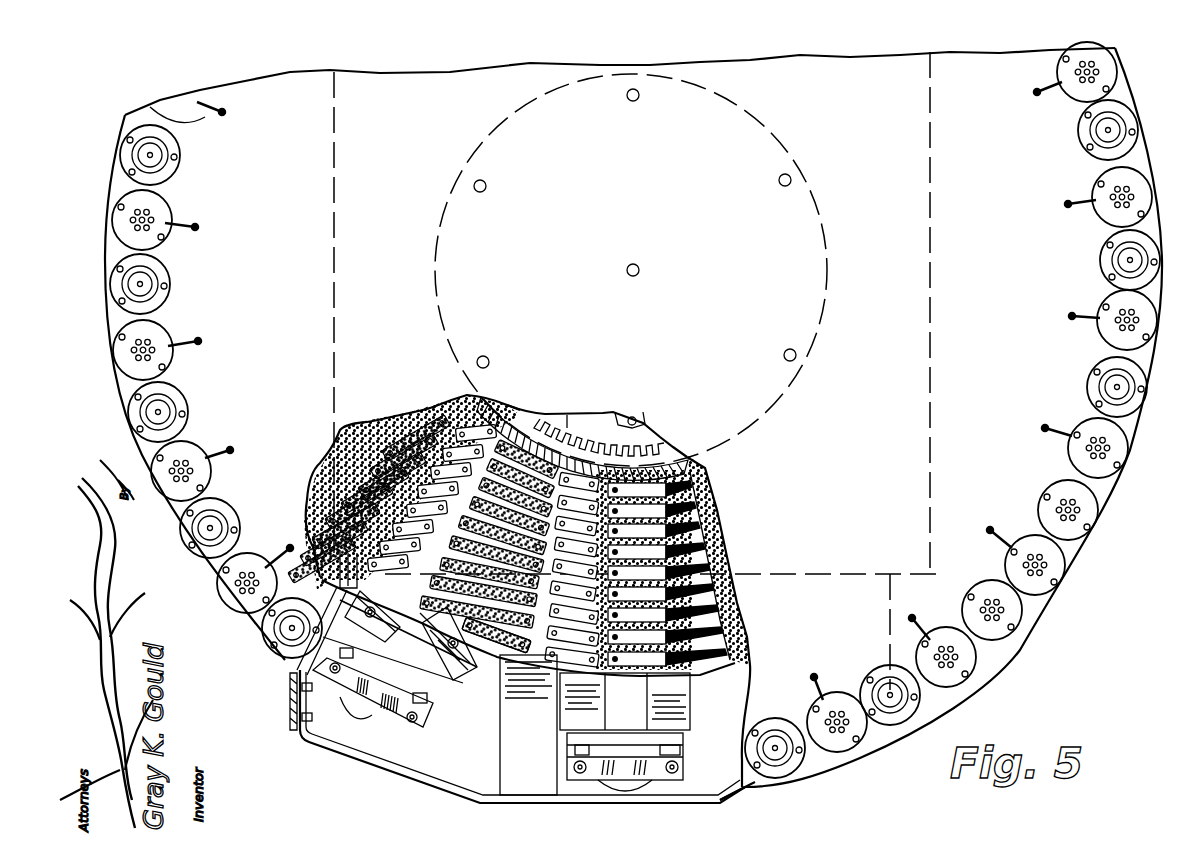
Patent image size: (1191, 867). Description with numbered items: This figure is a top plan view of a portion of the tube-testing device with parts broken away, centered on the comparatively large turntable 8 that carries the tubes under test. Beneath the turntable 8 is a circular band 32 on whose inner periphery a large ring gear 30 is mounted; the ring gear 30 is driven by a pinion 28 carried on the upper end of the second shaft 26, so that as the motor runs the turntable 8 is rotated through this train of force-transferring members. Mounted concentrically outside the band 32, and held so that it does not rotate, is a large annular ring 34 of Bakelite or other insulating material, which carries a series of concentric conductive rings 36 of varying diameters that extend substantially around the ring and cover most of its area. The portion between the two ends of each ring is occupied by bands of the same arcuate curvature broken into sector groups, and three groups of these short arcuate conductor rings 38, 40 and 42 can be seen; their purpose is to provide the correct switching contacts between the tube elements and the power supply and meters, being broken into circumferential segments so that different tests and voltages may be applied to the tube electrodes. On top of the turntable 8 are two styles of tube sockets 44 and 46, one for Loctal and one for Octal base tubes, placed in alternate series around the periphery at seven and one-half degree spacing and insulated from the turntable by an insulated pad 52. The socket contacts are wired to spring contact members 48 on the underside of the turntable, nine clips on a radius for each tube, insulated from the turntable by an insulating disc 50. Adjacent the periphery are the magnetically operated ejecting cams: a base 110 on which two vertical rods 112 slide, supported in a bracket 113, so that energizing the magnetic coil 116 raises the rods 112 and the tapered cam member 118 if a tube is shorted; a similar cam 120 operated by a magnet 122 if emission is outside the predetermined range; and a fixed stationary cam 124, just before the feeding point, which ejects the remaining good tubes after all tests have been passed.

The turntable 8 is at (268, 98).
The second shaft 26 is at (636, 420).
The pinion 28 is at (627, 412).
The ring gear 30 is at (541, 421).
The circular band 32 is at (670, 462).
The annular ring 34 is at (316, 524).
The conductive rings 36 is at (688, 672).
The short arcuate conductor rings 38 is at (572, 667).
The short arcuate conductor rings 40 is at (488, 652).
The short arcuate conductor rings 42 is at (385, 575).
The tube socket 44 is at (112, 283).
The tube socket 46 is at (120, 351).
The spring contact members 48 is at (698, 502).
The insulating disc 50 is at (712, 545).
The insulated pad 52 is at (160, 205).
The base 110 is at (428, 697).
The vertical rods 112 is at (422, 724).
The bracket 113 is at (300, 674).
The magnetic coil 116 is at (352, 702).
The cam member 118 is at (378, 706).
The cam 120 is at (624, 772).
The magnet 122 is at (658, 776).
The fixed stationary cam 124 is at (955, 668).